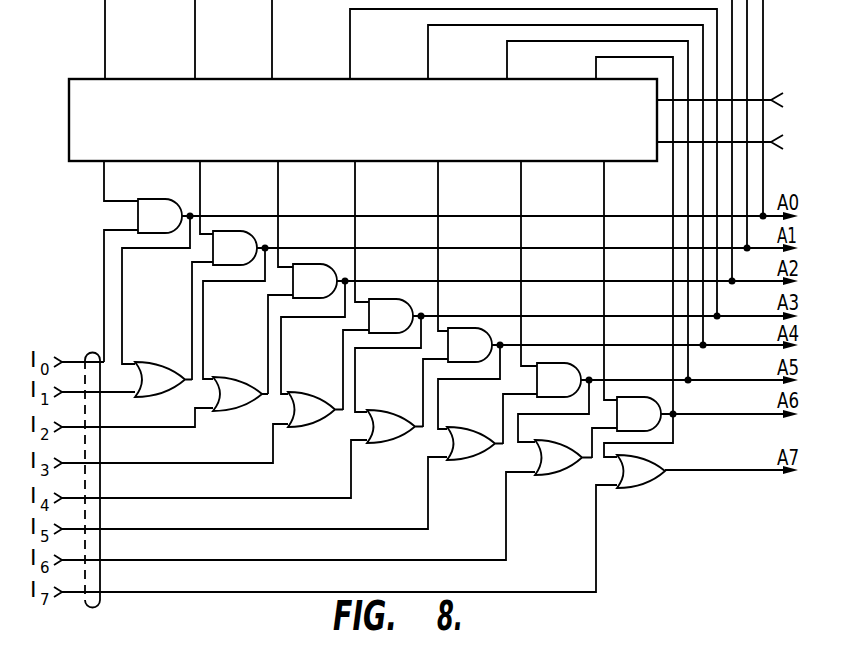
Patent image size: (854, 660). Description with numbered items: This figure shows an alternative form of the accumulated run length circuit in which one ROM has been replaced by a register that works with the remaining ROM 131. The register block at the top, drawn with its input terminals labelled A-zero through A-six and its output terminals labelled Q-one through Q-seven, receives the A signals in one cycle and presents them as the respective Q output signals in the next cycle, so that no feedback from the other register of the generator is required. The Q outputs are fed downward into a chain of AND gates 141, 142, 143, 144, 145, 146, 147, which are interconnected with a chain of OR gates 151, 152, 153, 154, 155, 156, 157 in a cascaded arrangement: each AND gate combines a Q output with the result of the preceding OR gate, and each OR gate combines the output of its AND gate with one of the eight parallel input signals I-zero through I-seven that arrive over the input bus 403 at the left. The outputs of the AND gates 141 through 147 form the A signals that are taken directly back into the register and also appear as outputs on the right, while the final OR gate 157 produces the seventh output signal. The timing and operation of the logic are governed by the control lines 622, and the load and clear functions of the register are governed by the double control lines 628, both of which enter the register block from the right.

The ROM 131 is at (87, 79).
The AND gate 141 is at (167, 198).
The AND gate 142 is at (254, 230).
The AND gate 143 is at (338, 263).
The AND gate 144 is at (413, 298).
The AND gate 145 is at (494, 327).
The AND gate 146 is at (586, 362).
The AND gate 147 is at (662, 404).
The OR gate 151 is at (163, 362).
The OR gate 152 is at (245, 377).
The OR gate 153 is at (320, 392).
The OR gate 154 is at (400, 410).
The OR gate 155 is at (480, 427).
The OR gate 156 is at (574, 440).
The OR gate 157 is at (664, 462).
The input bus cable 403 is at (91, 352).
The control lines 622 is at (770, 98).
The double control lines 628 is at (770, 140).